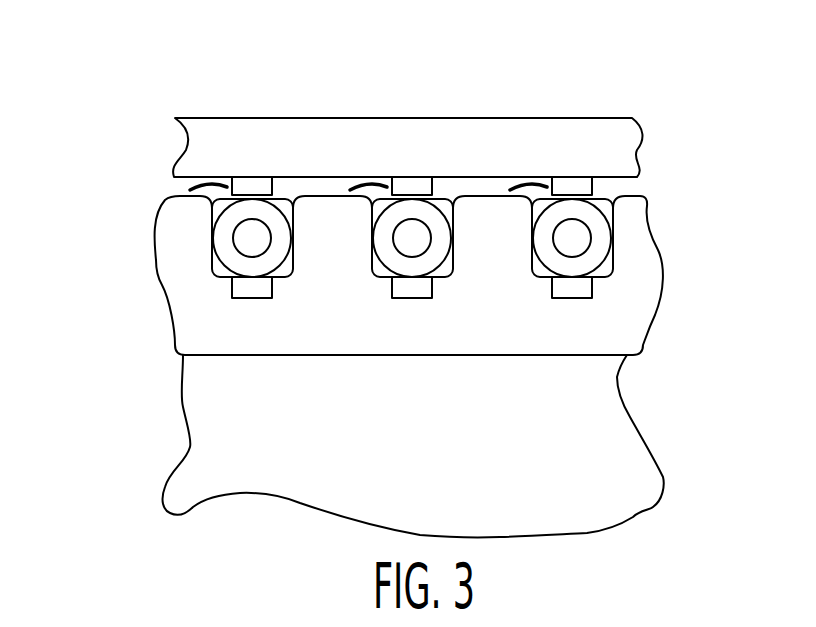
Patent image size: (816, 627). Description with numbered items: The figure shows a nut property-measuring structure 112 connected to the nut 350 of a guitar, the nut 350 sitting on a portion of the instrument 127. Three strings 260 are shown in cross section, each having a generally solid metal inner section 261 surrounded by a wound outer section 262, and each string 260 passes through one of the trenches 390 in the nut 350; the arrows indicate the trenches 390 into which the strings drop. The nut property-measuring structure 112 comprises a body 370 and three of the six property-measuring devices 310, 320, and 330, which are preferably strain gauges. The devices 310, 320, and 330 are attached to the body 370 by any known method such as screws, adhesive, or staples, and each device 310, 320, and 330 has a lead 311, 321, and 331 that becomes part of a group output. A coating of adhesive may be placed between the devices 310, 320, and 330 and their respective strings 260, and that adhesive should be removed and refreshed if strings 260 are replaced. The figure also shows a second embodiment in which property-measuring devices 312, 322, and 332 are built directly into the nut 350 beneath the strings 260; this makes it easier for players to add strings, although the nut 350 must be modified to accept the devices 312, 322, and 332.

The nut property-measuring structure 112 is at (134, 109).
The base member 127 is at (500, 508).
The string 260 is at (256, 340).
The inner section 261 is at (252, 235).
The wound outer section 262 is at (218, 247).
The property-measuring device 310 is at (572, 177).
The lead 311 is at (535, 185).
The property-measuring device 312 is at (580, 285).
The property-measuring device 320 is at (413, 177).
The lead 321 is at (375, 185).
The property-measuring device 322 is at (423, 285).
The property-measuring device 330 is at (247, 177).
The lead 331 is at (213, 183).
The property-measuring device 332 is at (263, 285).
The nut 350 is at (635, 260).
The body 370 is at (625, 140).
The trenches 390 is at (283, 190).